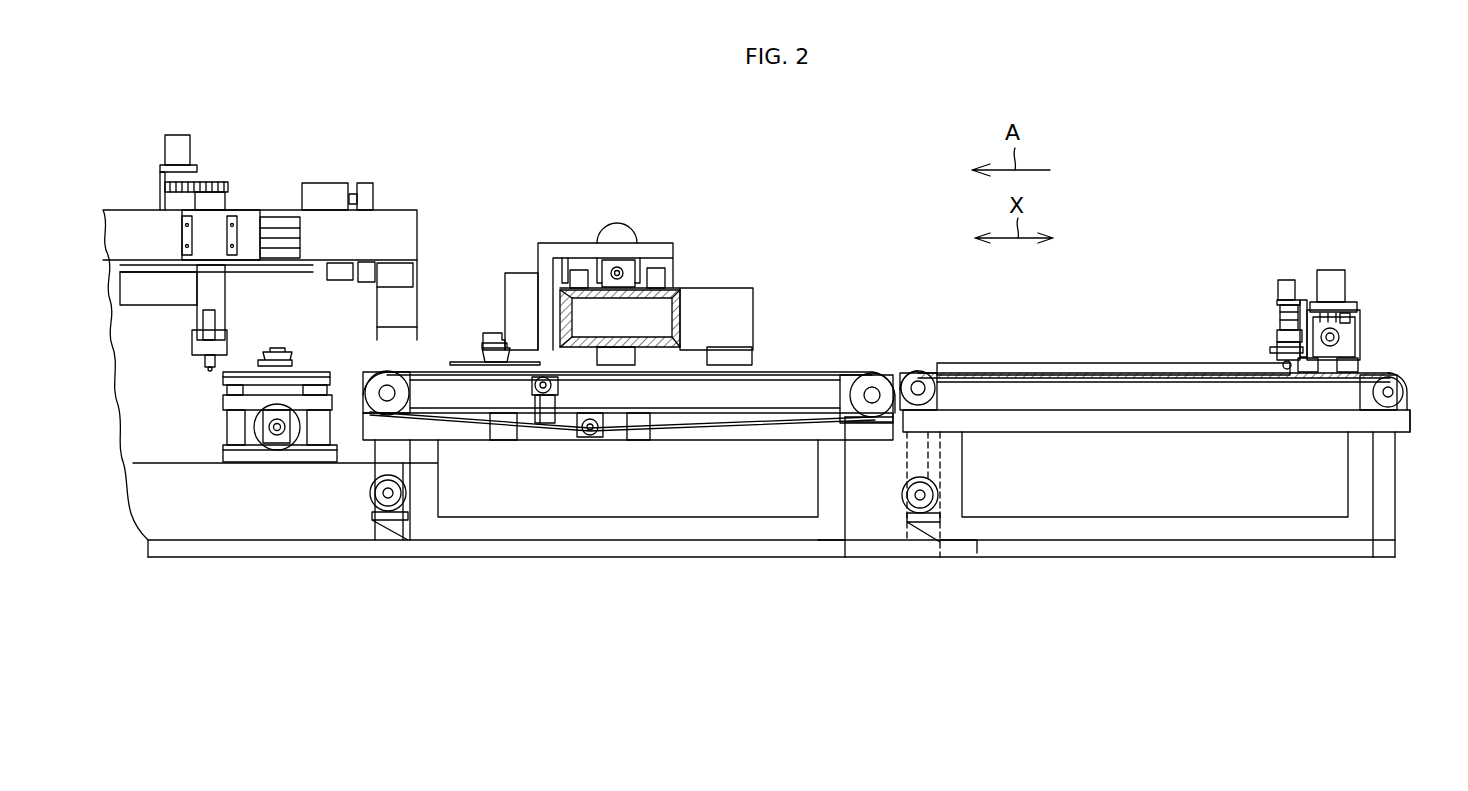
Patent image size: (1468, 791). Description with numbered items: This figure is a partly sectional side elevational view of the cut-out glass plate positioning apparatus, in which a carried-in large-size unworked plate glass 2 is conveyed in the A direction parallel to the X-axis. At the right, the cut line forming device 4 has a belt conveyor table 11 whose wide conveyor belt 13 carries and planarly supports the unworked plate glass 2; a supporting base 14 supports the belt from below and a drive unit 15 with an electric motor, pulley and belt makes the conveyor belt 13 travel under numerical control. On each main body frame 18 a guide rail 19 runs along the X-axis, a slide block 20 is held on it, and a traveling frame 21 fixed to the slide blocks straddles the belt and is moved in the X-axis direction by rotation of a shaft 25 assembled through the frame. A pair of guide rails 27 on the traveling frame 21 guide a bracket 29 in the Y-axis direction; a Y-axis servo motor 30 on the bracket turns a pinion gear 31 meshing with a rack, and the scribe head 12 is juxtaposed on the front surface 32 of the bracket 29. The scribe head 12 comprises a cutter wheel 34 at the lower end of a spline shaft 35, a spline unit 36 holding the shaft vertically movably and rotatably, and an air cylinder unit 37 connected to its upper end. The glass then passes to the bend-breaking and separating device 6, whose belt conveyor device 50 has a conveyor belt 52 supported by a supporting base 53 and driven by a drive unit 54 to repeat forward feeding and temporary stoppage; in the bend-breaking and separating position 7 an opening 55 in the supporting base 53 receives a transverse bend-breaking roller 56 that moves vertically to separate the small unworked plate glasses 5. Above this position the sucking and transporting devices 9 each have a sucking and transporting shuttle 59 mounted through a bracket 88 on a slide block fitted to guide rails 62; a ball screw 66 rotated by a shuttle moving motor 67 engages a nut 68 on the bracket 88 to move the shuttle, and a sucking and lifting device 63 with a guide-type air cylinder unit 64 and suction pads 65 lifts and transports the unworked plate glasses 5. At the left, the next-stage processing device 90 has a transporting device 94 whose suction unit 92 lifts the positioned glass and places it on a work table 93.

The unworked plate glass 2 is at (693, 367).
The cut line forming device 4 is at (1170, 338).
The unworked plate glasses 5 is at (470, 362).
The bend-breaking and separating device 6 is at (733, 268).
The bend-breaking and separating position 7 is at (555, 455).
The sucking and transporting devices 9 is at (523, 210).
The belt conveyor table 11 is at (1020, 375).
The scribe head 12 is at (1267, 318).
The conveyor belt 13 is at (1085, 378).
The supporting base 14 is at (1200, 392).
The drive unit 15 is at (920, 497).
The main body frames 18 is at (1150, 425).
The guide rail 19 is at (953, 368).
The slide block 20 is at (1347, 363).
The traveling frame 21 is at (1357, 335).
The shaft 25 is at (1335, 340).
The guide rails 27 is at (1343, 320).
The bracket 29 is at (1332, 308).
The Y-axis servo motor 30 is at (1330, 272).
The pinion gear 31 is at (1337, 327).
The front surface 32 is at (1280, 305).
The cutter wheel 34 is at (1290, 369).
The spline shaft 35 is at (1283, 355).
The spline unit 36 is at (1277, 336).
The air cylinder unit 37 is at (1287, 282).
The belt conveyor device 50 is at (845, 373).
The conveyor belt 52 is at (790, 375).
The supporting base 53 is at (730, 392).
The drive unit 54 is at (388, 495).
The opening 55 is at (545, 390).
The transverse bend-breaking roller 56 is at (548, 390).
The sucking and transporting shuttle 59 is at (508, 293).
The guide rails 62 is at (577, 272).
The sucking and lifting device 63 is at (512, 322).
The guide-type air cylinder unit 64 is at (520, 272).
The suction pads 65 is at (493, 364).
The ball screw 66 is at (619, 272).
The shuttle moving motor 67 is at (615, 238).
The nut 68 is at (622, 263).
The bracket 88 is at (543, 300).
The processing device 90 is at (270, 215).
The suction unit 92 is at (293, 362).
The work table 93 is at (232, 378).
The transporting device 94 is at (155, 323).